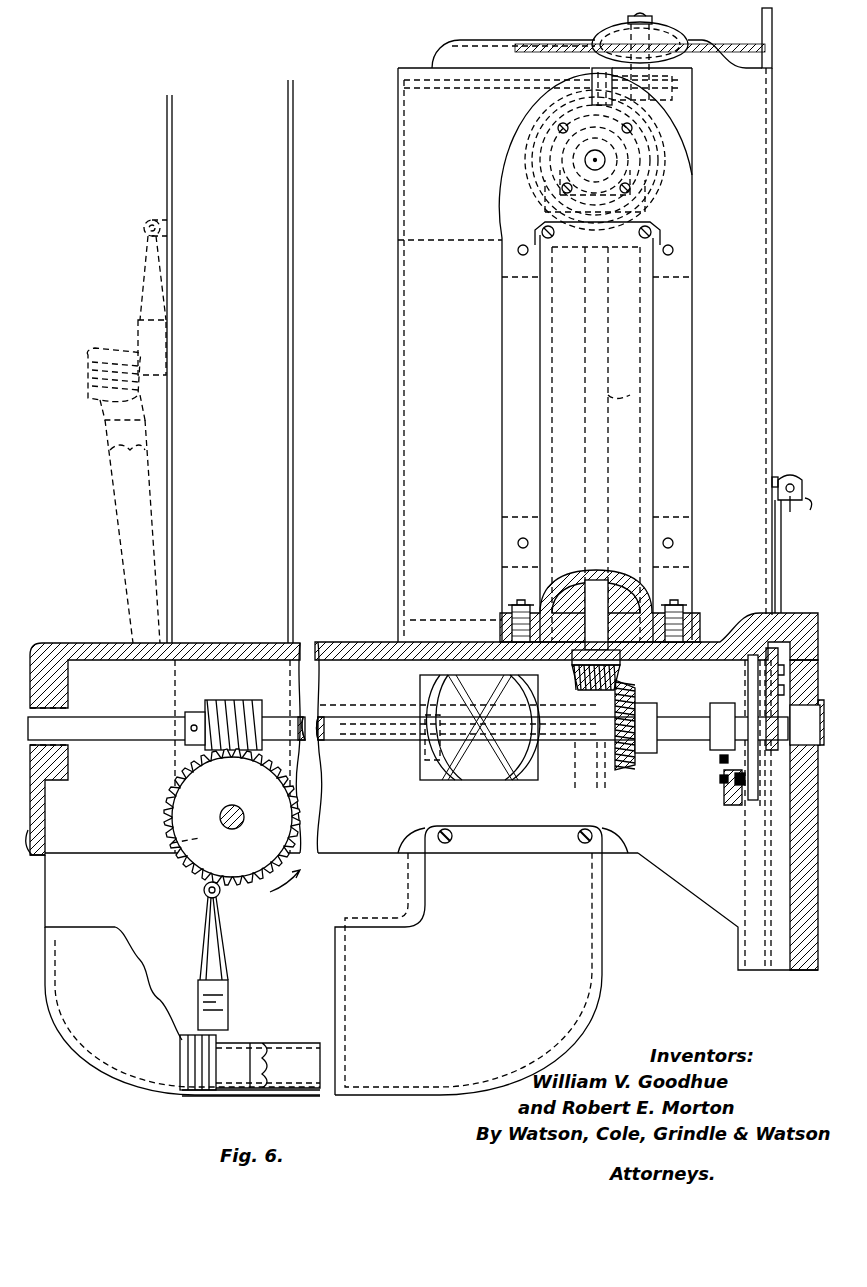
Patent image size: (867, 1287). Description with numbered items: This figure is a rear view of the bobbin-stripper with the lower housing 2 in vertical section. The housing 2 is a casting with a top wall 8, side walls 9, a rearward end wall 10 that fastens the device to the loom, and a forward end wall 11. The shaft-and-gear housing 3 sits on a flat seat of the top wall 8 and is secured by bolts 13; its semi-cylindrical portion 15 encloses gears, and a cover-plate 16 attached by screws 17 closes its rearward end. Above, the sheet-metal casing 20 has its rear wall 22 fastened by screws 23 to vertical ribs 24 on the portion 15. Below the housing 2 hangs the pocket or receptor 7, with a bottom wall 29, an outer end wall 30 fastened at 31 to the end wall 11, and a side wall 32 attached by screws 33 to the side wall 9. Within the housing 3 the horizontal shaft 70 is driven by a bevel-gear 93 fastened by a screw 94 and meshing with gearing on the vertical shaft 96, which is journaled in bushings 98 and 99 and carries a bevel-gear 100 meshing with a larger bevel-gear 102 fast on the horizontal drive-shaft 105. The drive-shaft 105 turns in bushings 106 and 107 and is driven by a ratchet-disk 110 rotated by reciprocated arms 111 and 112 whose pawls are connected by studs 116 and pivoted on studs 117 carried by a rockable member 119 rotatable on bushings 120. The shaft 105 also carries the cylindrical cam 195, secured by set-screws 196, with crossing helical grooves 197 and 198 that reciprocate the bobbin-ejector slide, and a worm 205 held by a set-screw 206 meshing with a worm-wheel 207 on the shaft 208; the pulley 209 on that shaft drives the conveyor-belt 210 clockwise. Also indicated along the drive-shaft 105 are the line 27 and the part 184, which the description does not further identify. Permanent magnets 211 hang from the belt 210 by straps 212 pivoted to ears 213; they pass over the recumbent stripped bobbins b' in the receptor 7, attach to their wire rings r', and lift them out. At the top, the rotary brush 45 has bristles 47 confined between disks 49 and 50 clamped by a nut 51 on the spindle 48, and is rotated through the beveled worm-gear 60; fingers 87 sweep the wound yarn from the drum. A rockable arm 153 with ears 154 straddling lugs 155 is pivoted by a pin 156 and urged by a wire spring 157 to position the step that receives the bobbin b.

The lower housing 2 is at (379, 862).
The shaft-and-gear housing 3 is at (531, 398).
The pocket or receptor 7 is at (595, 1003).
The top wall 8 is at (360, 618).
The side wall 9 is at (347, 850).
The rearward end wall 10 is at (795, 935).
The forward end wall 11 is at (45, 822).
The bolts 13 is at (510, 606).
The semi-cylindrical portion 15 is at (602, 570).
The cover-plate 16 is at (572, 240).
The screws 17 is at (640, 145).
The casing 20 is at (388, 300).
The rear wall 22 is at (420, 488).
The screws 23 is at (517, 252).
The vertical ribs 24 is at (540, 462).
The shaft axis 27 is at (415, 705).
The bottom wall 29 is at (250, 1094).
The outer end wall 30 is at (47, 905).
The fastening 31 is at (45, 855).
The side wall 32 is at (383, 935).
The screws 33 is at (448, 843).
The rotary brush 45 is at (503, 50).
The bristles 47 is at (520, 44).
The screw-threaded spindle 48 is at (647, 13).
The concavo-convex disk 49 is at (672, 34).
The concavo-convex disk 50 is at (704, 60).
The nut 51 is at (670, 50).
The beveled worm-gear 60 is at (674, 100).
The horizontal shaft 70 is at (542, 146).
The fingers 87 is at (545, 172).
The bevel-gear 93 is at (632, 156).
The screw 94 is at (648, 206).
The vertical shaft 96 is at (621, 384).
The bushing 98 is at (609, 443).
The bushing 99 is at (612, 615).
The bevel-gear 100 is at (622, 660).
The bevel-gear 102 is at (632, 762).
The drive-shaft 105 is at (385, 740).
The bushing 106 is at (70, 716).
The bushing 107 is at (766, 795).
The ratchet-disk 110 is at (748, 705).
The reciprocated arm 111 is at (768, 660).
The reciprocated arm 112 is at (724, 800).
The studs 116 is at (733, 782).
The studs 117 is at (718, 762).
The rockable member 119 is at (715, 745).
The bushings 120 is at (712, 715).
The rockable arm 153 is at (777, 578).
The ears 154 is at (795, 482).
The lugs 155 is at (778, 478).
The pin 156 is at (803, 520).
The wire spring 157 is at (808, 512).
The hub 184 is at (602, 745).
The cylindrical cam 195 is at (450, 780).
The set-screws 196 is at (432, 760).
The helical groove 197 is at (480, 780).
The helical groove 198 is at (510, 780).
The worm 205 is at (240, 700).
The set-screw 206 is at (196, 712).
The worm-wheel 207 is at (182, 862).
The shaft 208 is at (232, 829).
The pulley 209 is at (230, 812).
The conveyor-belt 210 is at (294, 465).
The permanent magnets 211 is at (230, 1000).
The straps 212 is at (203, 930).
The ears 213 is at (204, 894).
The bobbin b is at (110, 531).
The stripped bobbins b' is at (268, 1048).
The wire rings r' is at (194, 1046).